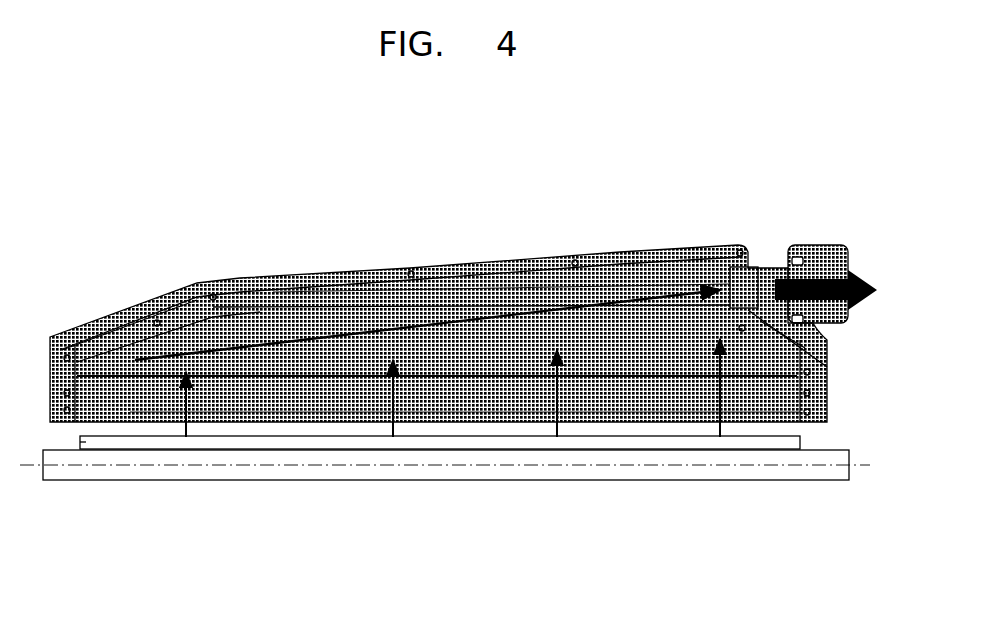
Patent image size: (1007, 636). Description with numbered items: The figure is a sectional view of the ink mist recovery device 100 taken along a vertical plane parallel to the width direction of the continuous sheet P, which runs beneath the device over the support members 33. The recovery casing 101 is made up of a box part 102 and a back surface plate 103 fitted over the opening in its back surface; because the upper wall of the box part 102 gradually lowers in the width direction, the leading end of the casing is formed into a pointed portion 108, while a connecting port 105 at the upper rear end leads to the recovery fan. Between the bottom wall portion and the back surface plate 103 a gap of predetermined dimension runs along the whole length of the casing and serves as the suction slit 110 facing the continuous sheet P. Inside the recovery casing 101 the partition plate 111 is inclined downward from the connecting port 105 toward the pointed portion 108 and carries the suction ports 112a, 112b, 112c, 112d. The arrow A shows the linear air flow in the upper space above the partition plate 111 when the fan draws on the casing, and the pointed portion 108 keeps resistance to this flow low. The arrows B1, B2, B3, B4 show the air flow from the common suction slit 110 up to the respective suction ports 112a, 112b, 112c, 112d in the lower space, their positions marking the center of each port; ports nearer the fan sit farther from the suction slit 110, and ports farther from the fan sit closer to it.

The ink mist recovery device 100 is at (548, 215).
The recovery casing 101 is at (312, 208).
The box part 102 is at (282, 328).
The back surface plate 103 is at (217, 300).
The connecting port 105 is at (760, 268).
The pointed portion 108 is at (123, 363).
The suction slit 110 is at (325, 440).
The partition plate 111 is at (466, 350).
The suction port 112a is at (720, 340).
The suction port 112b is at (557, 350).
The suction port 112c is at (392, 357).
The suction port 112d is at (230, 367).
The support member 33 is at (68, 483).
The arrow indicating air flow direction A is at (357, 330).
The arrow indicating air flow direction B1 is at (723, 377).
The arrow indicating air flow direction B2 is at (562, 380).
The arrow indicating air flow direction B3 is at (397, 380).
The arrow indicating air flow direction B4 is at (188, 372).
The continuous sheet P is at (78, 445).